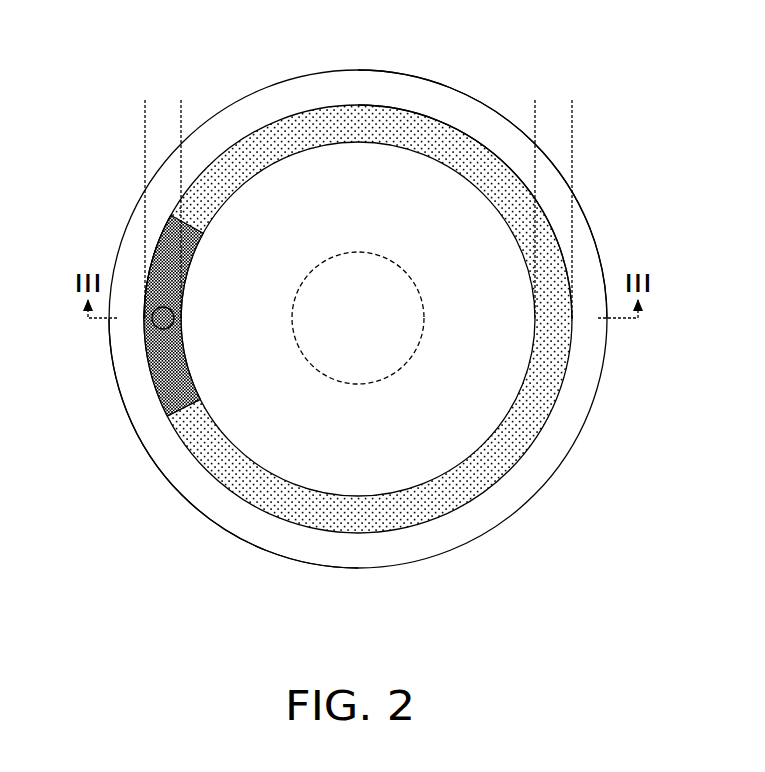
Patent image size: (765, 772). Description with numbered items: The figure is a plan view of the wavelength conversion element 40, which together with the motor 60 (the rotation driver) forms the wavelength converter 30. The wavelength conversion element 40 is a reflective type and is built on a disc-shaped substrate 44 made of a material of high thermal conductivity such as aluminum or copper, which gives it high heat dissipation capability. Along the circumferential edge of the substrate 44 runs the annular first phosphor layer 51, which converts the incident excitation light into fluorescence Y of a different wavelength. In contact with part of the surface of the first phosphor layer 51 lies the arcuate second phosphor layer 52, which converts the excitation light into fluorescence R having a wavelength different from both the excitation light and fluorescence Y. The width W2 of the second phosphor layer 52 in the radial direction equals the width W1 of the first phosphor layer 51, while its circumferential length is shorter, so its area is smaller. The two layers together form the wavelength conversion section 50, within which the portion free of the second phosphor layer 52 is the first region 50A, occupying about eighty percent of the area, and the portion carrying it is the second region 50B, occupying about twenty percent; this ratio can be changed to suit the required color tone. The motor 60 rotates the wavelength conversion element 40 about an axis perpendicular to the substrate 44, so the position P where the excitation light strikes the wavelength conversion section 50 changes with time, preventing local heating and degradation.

The wavelength converter 30 is at (396, 60).
The wavelength conversion element 40 is at (491, 97).
The substrate 44 is at (212, 510).
The wavelength conversion section 50 is at (238, 126).
The first region 50A is at (564, 235).
The second region 50B is at (135, 260).
The first phosphor layer 51 is at (163, 413).
The second phosphor layer 52 is at (165, 372).
The motor 60 is at (395, 366).
The position P is at (174, 322).
The width of the first phosphor layer W1 is at (571, 110).
The width of the second phosphor layer W2 is at (180, 110).